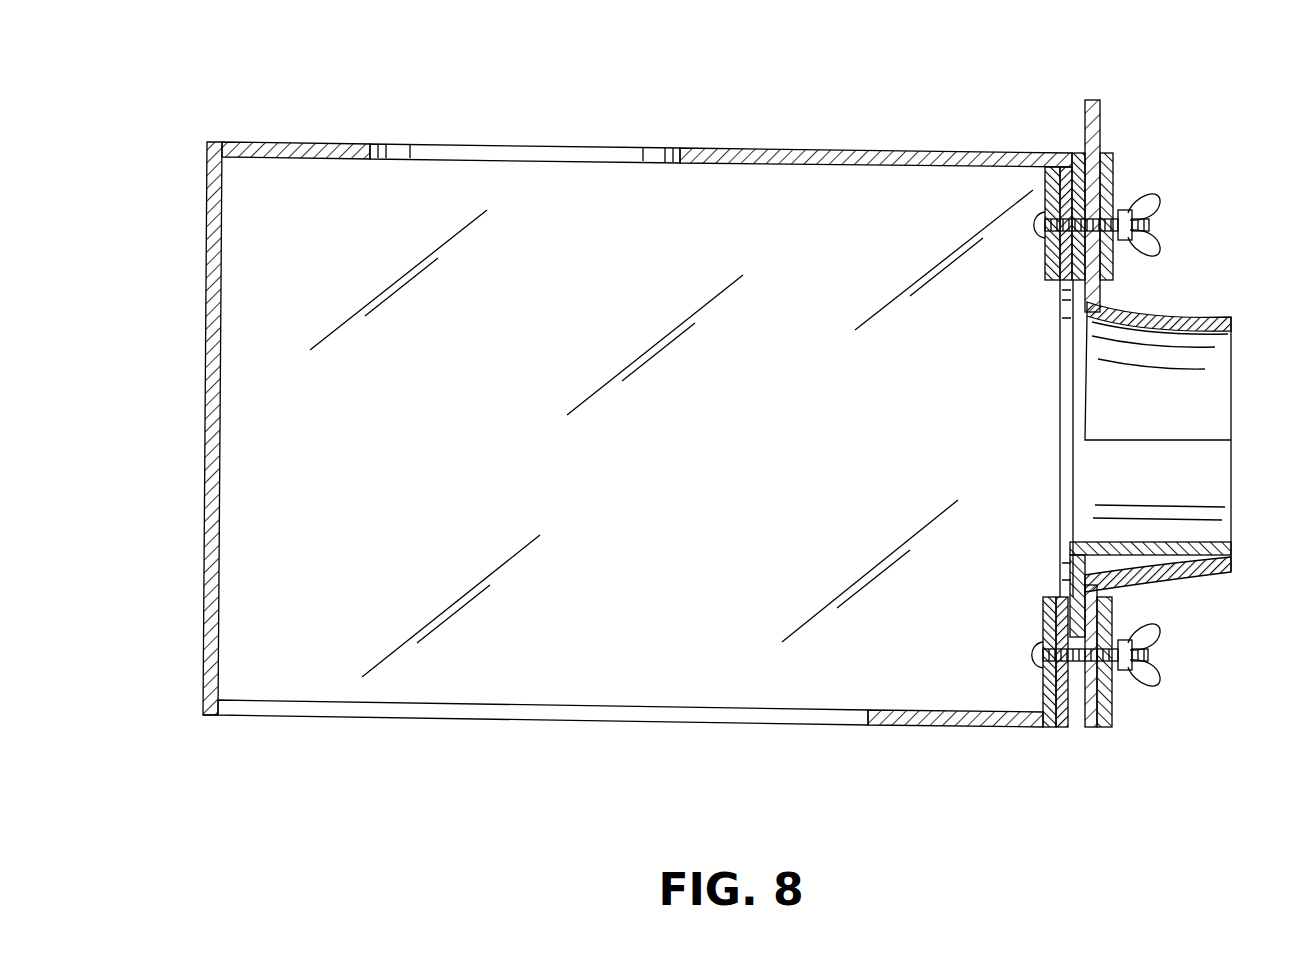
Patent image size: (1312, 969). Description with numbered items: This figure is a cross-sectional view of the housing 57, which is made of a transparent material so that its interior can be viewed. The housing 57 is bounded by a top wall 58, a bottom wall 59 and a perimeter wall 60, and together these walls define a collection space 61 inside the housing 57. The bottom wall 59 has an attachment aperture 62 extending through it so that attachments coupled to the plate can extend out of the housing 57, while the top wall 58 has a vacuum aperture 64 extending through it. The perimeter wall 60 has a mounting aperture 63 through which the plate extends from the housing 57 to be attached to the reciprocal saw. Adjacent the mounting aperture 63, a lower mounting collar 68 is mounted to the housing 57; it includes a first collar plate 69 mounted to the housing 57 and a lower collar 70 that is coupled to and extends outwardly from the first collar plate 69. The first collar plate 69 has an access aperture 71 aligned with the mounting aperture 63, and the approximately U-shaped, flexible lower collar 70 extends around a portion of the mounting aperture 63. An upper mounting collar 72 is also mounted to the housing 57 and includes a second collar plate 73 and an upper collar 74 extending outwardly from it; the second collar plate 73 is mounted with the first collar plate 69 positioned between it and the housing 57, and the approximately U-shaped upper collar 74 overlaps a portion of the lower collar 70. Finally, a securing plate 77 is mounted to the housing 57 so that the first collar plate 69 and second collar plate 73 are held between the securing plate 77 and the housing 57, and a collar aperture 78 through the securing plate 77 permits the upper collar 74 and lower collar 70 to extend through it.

The housing 57 is at (203, 713).
The top wall 58 is at (307, 142).
The bottom wall 59 is at (937, 727).
The perimeter wall 60 is at (207, 380).
The collection space 61 is at (650, 652).
The attachment aperture 62 is at (733, 715).
The mounting aperture 63 is at (1063, 383).
The vacuum aperture 64 is at (537, 157).
The lower mounting collar 68 is at (1079, 153).
The first collar plate 69 is at (1045, 190).
The lower collar 70 is at (1215, 481).
The access aperture 71 is at (1105, 302).
The upper mounting collar 72 is at (1093, 100).
The second collar plate 73 is at (1100, 118).
The upper collar 74 is at (1232, 322).
The securing plate 77 is at (1115, 165).
The collar aperture 78 is at (1118, 590).